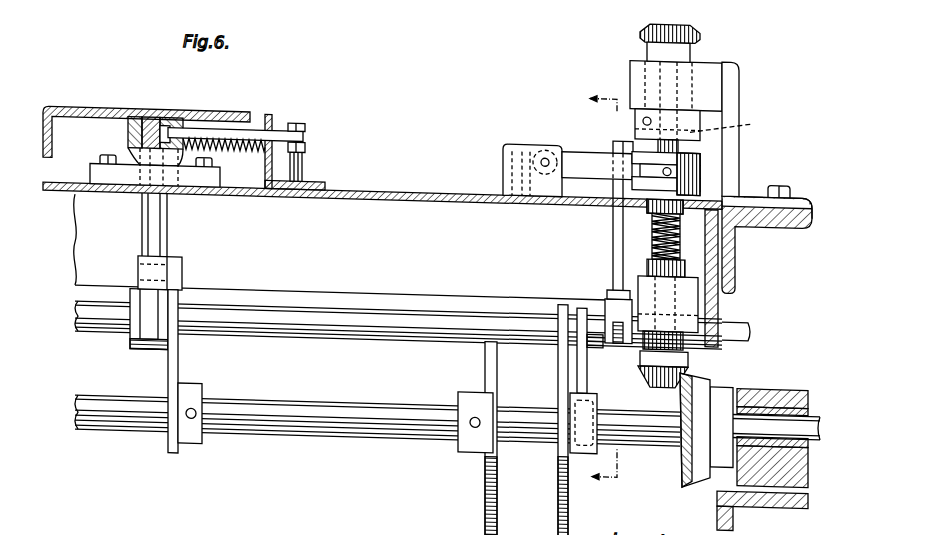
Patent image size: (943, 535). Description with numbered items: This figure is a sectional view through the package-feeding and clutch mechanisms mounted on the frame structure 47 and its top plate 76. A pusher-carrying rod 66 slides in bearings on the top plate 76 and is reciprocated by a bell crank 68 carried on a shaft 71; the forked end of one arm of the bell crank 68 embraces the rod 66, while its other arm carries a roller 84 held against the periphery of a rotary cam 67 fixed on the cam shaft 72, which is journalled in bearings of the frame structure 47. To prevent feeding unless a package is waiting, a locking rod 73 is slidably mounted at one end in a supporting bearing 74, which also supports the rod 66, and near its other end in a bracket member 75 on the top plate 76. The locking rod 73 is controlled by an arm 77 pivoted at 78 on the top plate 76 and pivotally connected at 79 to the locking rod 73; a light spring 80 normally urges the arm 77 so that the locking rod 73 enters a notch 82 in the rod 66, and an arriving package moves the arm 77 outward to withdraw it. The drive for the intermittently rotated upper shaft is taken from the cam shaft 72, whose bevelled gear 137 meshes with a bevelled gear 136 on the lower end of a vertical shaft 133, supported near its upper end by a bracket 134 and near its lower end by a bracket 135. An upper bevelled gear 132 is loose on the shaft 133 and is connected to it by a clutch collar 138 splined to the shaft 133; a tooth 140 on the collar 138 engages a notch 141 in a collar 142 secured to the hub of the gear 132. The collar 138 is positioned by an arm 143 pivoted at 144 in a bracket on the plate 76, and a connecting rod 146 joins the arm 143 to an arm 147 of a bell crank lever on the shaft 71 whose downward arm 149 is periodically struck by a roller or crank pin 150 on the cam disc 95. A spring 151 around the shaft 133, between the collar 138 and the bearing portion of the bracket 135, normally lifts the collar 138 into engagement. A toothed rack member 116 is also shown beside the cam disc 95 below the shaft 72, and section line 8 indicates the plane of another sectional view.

The section line 8- 8 is at (593, 289).
The frame structure 47 is at (75, 237).
The rod 66 is at (150, 113).
The rotary cam 67 is at (178, 355).
The bell crank 68 is at (168, 236).
The shaft 71 is at (247, 329).
The shaft 72 is at (315, 404).
The locking rod 73 is at (258, 123).
The supporting bearing 74 is at (128, 125).
The bracket member 75 is at (272, 108).
The top plate 76 is at (393, 181).
The arm 77 is at (305, 138).
The pivot 78 is at (303, 160).
The pivotal connection 79 is at (305, 119).
The spring 80 is at (226, 146).
The notch 82 is at (165, 113).
The roller 84 is at (185, 262).
The cam disc 95 is at (558, 478).
The rack 116 is at (485, 497).
The bevelled gear 132 is at (695, 14).
The shaft 133 is at (680, 130).
The bracket 134 is at (740, 50).
The bracket 135 is at (718, 284).
The bevelled gear 136 is at (642, 360).
The bevelled gear 137 is at (684, 462).
The clutch collar 138 is at (700, 154).
The tooth 140 is at (618, 126).
The notch 141 is at (737, 122).
The collar 142 is at (635, 104).
The arm 143 is at (580, 162).
The pivot 144 is at (545, 143).
The connecting rod 146 is at (613, 236).
The arm 147 is at (604, 322).
The arm 149 is at (580, 360).
The roller or crank pin 150 is at (572, 442).
The spring 151 is at (655, 222).